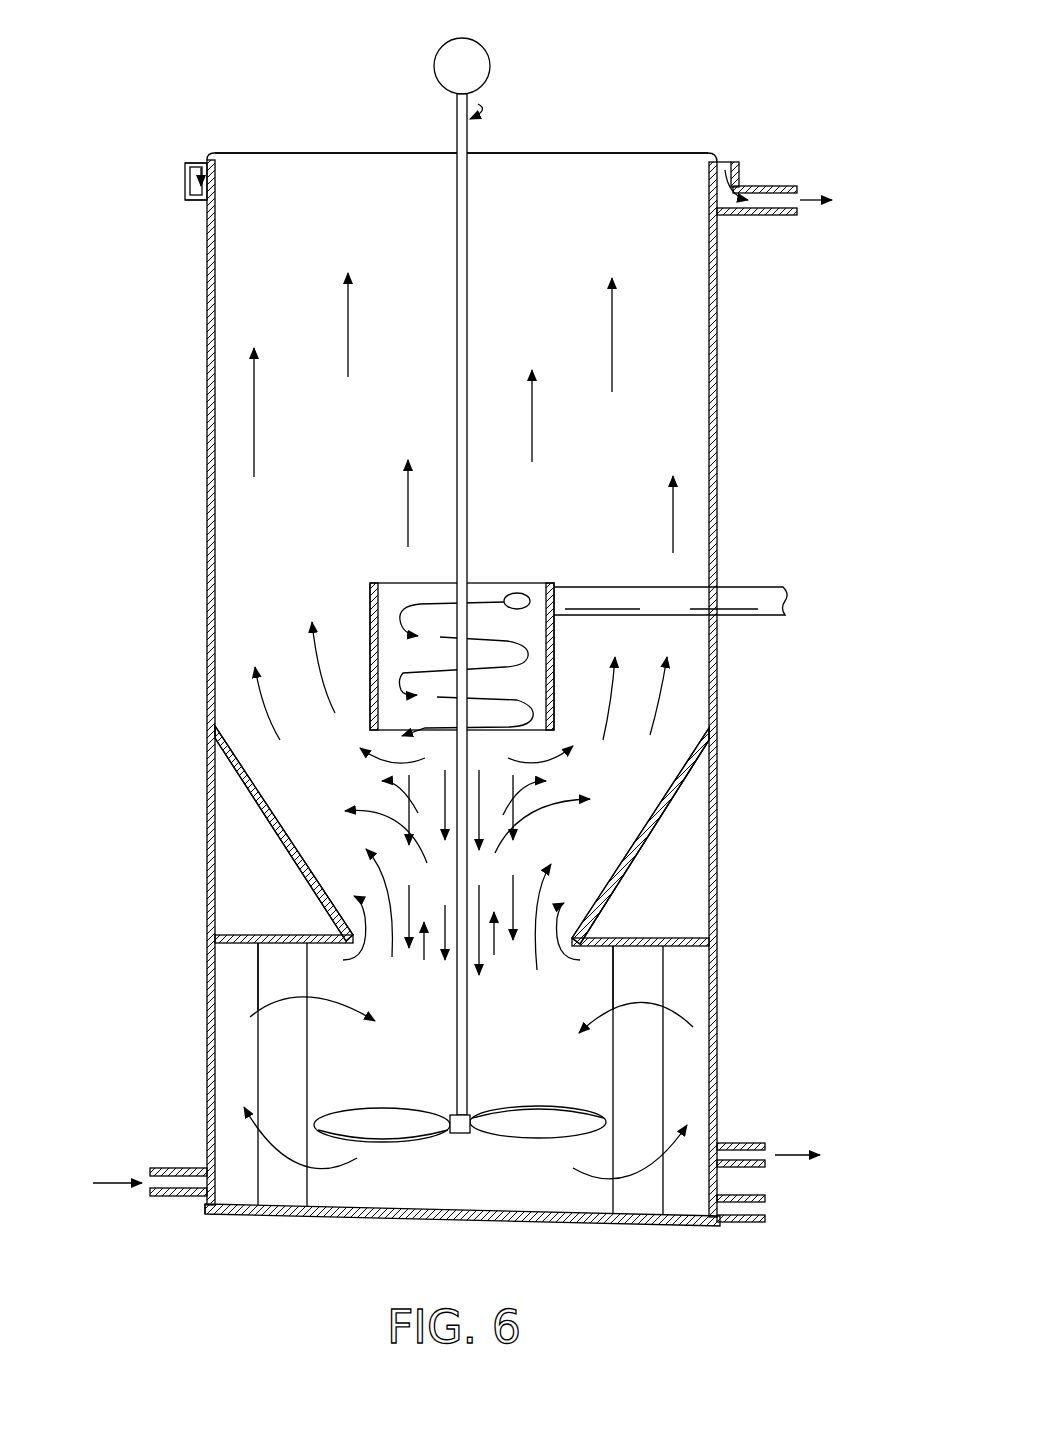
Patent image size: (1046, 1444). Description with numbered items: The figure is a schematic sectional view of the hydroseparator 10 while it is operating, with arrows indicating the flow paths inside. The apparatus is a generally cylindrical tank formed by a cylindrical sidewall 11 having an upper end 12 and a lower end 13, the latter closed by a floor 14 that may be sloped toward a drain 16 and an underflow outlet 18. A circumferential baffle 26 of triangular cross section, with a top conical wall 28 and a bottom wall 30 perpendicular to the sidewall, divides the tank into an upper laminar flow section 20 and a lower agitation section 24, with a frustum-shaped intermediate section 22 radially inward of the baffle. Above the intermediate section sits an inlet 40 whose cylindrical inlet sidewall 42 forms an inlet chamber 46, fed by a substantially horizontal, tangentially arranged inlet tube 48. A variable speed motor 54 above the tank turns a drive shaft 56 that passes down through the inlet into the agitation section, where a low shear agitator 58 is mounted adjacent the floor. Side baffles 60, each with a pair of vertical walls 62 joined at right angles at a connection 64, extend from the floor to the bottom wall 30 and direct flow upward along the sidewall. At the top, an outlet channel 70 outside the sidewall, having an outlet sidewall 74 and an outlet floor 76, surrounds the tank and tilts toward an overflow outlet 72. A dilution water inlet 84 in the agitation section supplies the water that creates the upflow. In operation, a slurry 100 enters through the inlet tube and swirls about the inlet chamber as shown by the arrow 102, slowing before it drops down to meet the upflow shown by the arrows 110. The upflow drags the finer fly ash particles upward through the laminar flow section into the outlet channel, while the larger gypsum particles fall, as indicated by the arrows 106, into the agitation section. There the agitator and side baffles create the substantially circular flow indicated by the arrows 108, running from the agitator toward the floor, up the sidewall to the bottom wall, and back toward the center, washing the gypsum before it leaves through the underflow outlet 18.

The hydroseparator 10 is at (167, 78).
The cylindrical sidewall 11 is at (207, 413).
The upper end 12 is at (212, 157).
The lower end 13 is at (203, 1225).
The floor 14 is at (415, 1215).
The drain 16 is at (729, 1226).
The underflow outlet 18 is at (748, 1152).
The laminar flow section 20 is at (678, 353).
The intermediate section 22 is at (300, 783).
The agitation section 24 is at (333, 1045).
The circumferential baffle 26 is at (650, 845).
The conical wall 28 is at (250, 800).
The bottom wall 30 is at (235, 934).
The inlet 40 is at (368, 612).
The inlet sidewall 42 is at (370, 613).
The inlet chamber 46 is at (393, 650).
The inlet tube 48 is at (601, 597).
The variable speed motor 54 is at (489, 55).
The drive shaft 56 is at (468, 228).
The low shear agitator 58 is at (512, 1130).
The side baffle 60 is at (283, 1212).
The vertical walls 62 is at (283, 968).
The connection 64 is at (310, 965).
The outlet channel 70 is at (185, 183).
The overflow outlet 72 is at (765, 190).
The outlet sidewall 74 is at (188, 170).
The outlet floor 76 is at (198, 197).
The dilution water inlet 84 is at (180, 1190).
The slurry 100 is at (793, 598).
The swirling arrow 102 is at (515, 668).
The settling arrows 106 is at (410, 895).
The circular flow arrows 108 is at (283, 1000).
The upflow arrows 110 is at (377, 870).